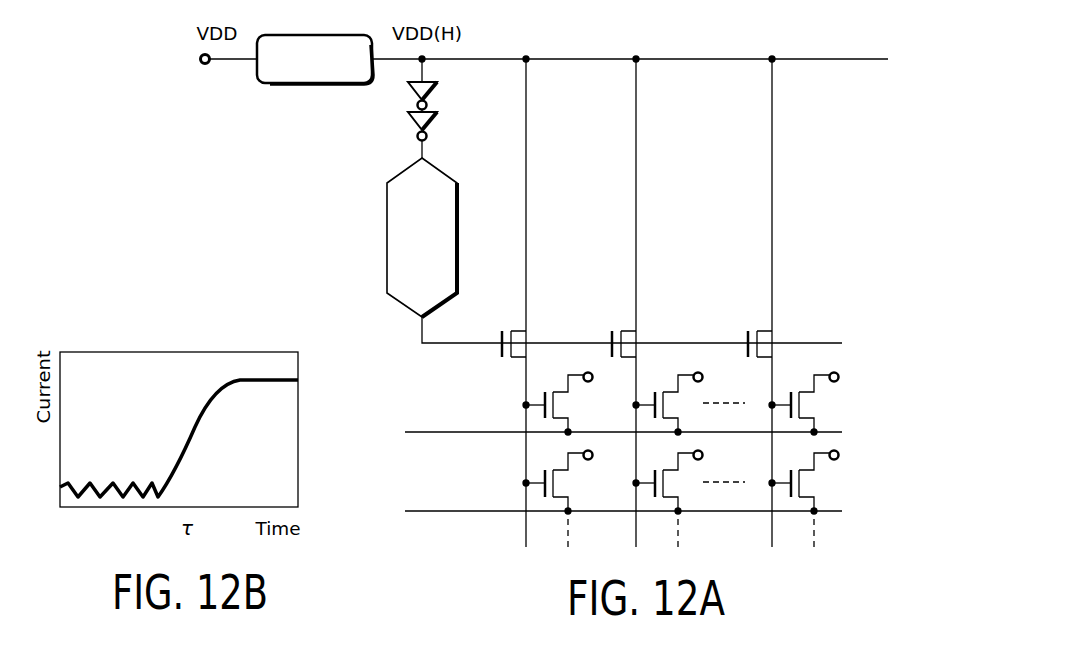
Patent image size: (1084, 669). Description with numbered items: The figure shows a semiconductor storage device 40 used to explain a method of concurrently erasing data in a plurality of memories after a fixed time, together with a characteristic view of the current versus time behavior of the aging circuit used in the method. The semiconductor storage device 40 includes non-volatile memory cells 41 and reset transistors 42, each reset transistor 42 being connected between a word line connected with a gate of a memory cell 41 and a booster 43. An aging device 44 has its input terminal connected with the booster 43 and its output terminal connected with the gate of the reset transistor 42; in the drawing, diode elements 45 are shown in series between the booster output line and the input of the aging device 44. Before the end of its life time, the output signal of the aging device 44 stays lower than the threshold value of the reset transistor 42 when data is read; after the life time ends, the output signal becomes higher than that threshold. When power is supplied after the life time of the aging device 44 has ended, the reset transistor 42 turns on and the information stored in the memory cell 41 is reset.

The semiconductor storage device 40 is at (787, 167).
The non-volatile memory cell 41 is at (568, 403).
The reset transistor 42 is at (505, 326).
The booster 43 is at (316, 84).
The aging device 44 is at (437, 171).
The diodes 45 is at (438, 100).